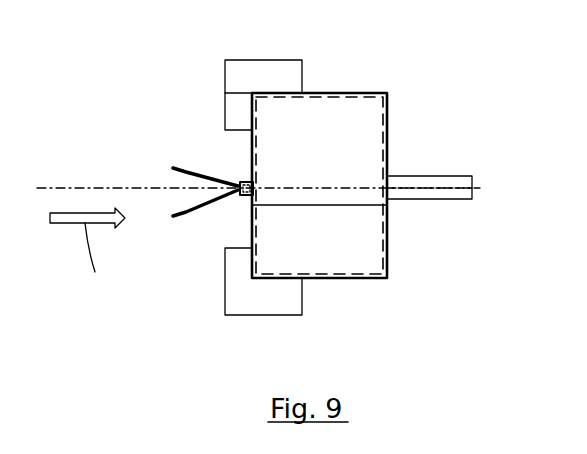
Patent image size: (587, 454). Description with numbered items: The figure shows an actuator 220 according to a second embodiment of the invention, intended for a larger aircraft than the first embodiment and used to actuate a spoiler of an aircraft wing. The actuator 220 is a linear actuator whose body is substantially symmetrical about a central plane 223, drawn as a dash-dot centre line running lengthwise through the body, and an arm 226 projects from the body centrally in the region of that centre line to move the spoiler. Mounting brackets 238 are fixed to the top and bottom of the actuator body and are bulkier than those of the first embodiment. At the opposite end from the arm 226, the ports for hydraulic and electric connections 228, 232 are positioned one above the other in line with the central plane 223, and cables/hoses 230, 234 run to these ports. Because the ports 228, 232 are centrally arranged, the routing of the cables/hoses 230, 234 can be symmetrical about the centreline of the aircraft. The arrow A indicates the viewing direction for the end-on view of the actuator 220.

The actuator 220 is at (124, 125).
The central plane 223 is at (413, 190).
The arm 226 is at (432, 183).
The port for hydraulic connection 228 is at (246, 196).
The cable/hose 230 is at (181, 217).
The port for electric connection 232 is at (246, 181).
The cable/hose 234 is at (188, 170).
The mounting bracket 238 is at (275, 83).